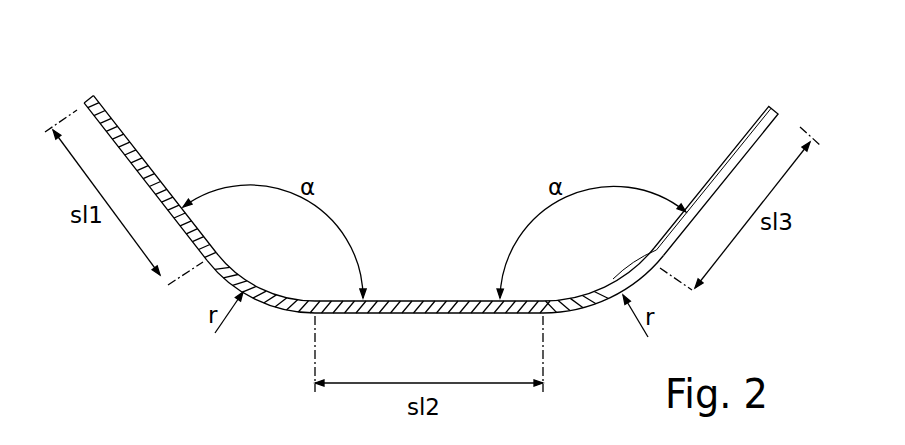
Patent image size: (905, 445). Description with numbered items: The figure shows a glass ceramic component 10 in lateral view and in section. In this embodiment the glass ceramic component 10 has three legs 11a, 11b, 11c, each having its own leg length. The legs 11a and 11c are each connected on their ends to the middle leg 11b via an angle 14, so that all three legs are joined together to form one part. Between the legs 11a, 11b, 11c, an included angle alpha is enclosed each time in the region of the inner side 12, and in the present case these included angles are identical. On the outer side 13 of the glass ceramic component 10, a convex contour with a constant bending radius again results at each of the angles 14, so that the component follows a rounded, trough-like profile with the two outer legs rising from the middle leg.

The glass ceramic component 10 is at (97, 99).
The leg 11a is at (134, 152).
The leg 11b is at (453, 298).
The leg 11c is at (742, 148).
The inner side 12 is at (417, 299).
The outer side 13 is at (455, 318).
The angle 14 is at (273, 302).